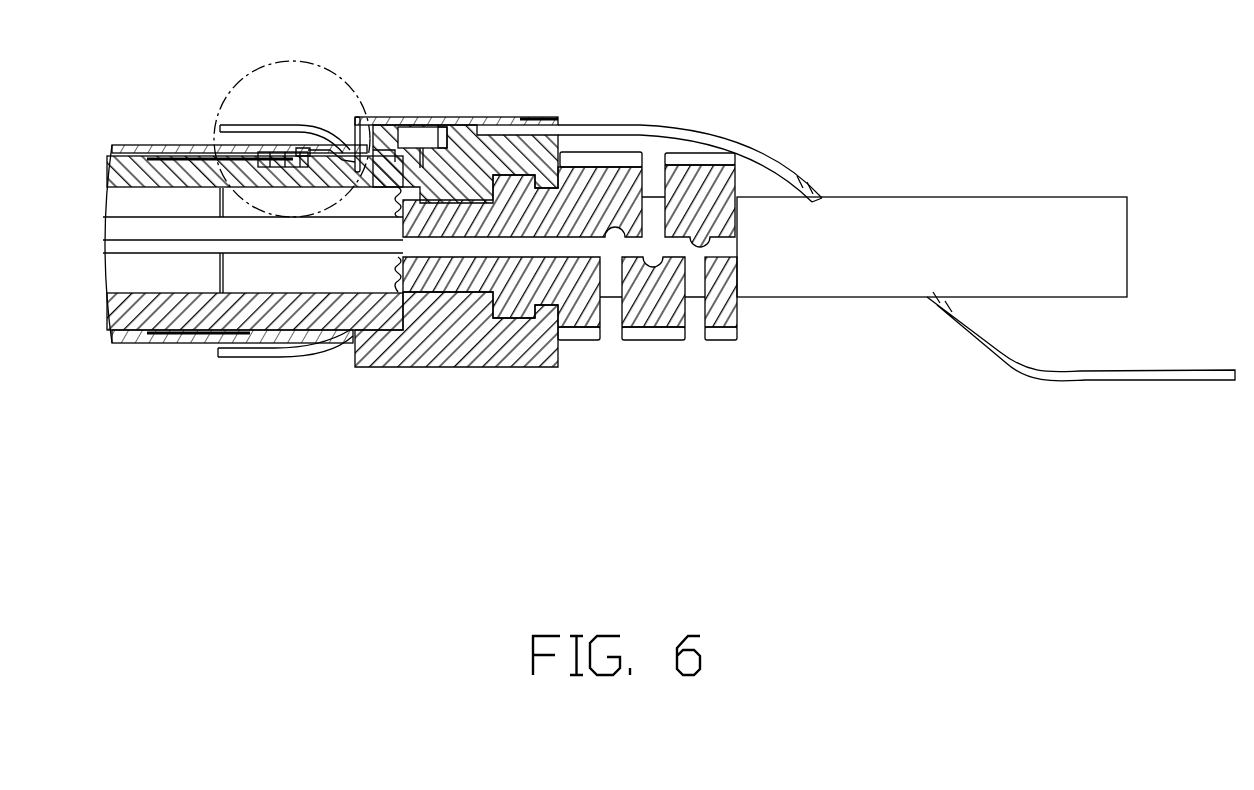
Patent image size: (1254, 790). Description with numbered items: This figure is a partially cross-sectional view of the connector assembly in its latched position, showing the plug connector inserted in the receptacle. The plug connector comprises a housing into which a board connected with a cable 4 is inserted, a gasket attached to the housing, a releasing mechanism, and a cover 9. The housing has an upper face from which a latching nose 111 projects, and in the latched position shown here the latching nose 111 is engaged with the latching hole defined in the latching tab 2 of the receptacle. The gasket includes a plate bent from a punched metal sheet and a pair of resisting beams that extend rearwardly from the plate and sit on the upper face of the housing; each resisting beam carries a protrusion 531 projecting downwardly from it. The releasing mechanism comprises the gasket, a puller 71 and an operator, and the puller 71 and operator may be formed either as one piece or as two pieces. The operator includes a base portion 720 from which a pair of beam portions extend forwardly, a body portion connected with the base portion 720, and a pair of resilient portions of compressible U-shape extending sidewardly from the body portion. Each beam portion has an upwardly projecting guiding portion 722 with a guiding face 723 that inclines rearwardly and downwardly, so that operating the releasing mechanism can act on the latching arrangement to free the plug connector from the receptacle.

The latching tab 2 is at (345, 195).
The cable 4 is at (985, 222).
The cover 9 is at (452, 126).
The puller 71 is at (773, 163).
The latching nose 111 is at (307, 143).
The protrusion 531 is at (323, 157).
The base portion 720 is at (393, 153).
The guiding portion 722 is at (162, 158).
The guiding face 723 is at (287, 157).